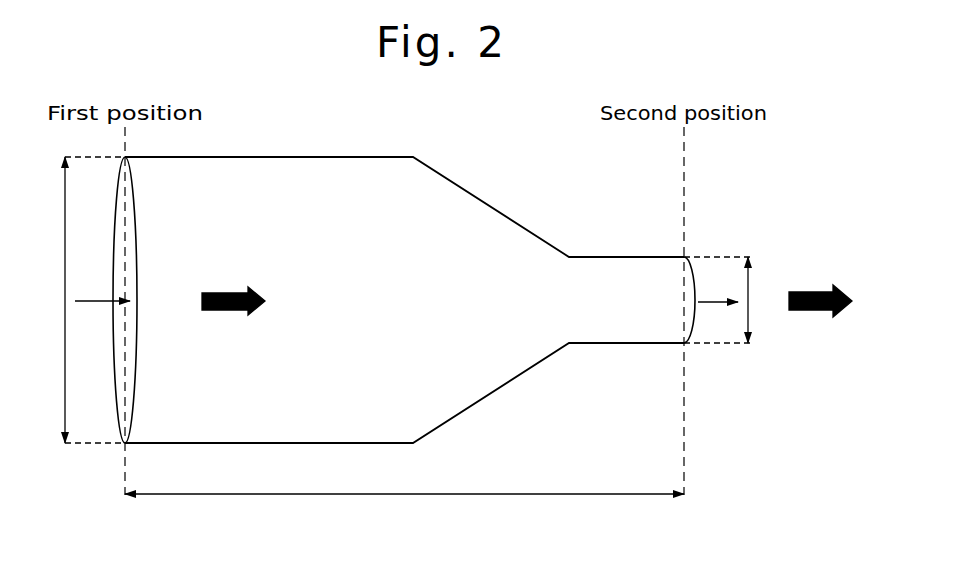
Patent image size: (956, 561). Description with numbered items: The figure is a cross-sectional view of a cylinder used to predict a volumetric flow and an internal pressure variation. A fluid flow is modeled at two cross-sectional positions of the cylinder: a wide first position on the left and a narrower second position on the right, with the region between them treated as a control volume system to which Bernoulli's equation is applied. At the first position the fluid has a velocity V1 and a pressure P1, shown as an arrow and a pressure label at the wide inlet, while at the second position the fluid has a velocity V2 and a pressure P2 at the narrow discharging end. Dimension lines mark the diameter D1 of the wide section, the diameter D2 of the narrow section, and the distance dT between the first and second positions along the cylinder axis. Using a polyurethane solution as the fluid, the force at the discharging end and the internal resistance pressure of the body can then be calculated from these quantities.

The first diameter D1 is at (85, 300).
The second diameter D2 is at (730, 300).
The distance between first and second positions dT is at (404, 508).
The pressure of the first position P1 is at (102, 288).
The pressure of the second position P2 is at (718, 289).
The velocity of a fluid at a first cross-sectional position V1 is at (233, 289).
The velocity of a fluid at a second cross-sectional position V2 is at (820, 290).